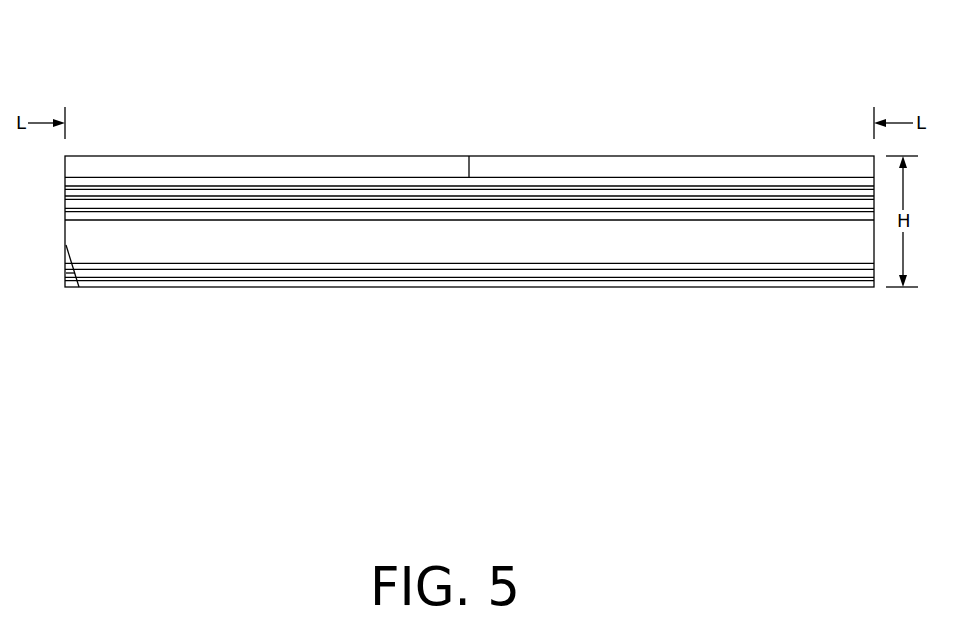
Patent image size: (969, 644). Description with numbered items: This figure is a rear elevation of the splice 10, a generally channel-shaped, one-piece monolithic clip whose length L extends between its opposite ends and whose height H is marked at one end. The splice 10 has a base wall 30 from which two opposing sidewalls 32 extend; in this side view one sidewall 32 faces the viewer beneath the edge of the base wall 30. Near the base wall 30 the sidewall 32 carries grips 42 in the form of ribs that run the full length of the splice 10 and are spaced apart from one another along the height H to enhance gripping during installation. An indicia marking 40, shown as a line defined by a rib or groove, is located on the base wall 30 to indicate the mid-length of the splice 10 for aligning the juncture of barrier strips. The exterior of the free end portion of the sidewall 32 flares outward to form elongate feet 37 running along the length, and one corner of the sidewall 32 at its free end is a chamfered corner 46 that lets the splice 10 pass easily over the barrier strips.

The splice 10 is at (650, 68).
The base wall 30 is at (678, 156).
The sidewall 32 is at (643, 240).
The elongate feet 37 is at (394, 280).
The indicia marking 40 is at (470, 161).
The grips 42 is at (302, 217).
The chamfered corner 46 is at (66, 263).